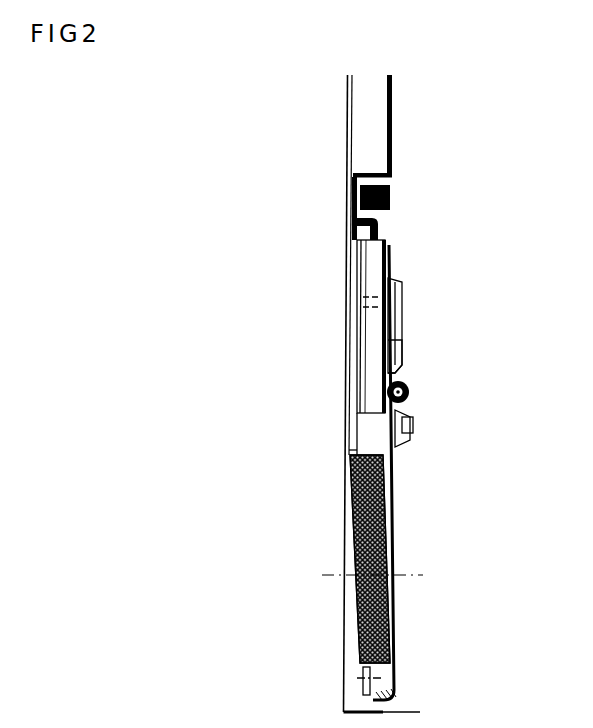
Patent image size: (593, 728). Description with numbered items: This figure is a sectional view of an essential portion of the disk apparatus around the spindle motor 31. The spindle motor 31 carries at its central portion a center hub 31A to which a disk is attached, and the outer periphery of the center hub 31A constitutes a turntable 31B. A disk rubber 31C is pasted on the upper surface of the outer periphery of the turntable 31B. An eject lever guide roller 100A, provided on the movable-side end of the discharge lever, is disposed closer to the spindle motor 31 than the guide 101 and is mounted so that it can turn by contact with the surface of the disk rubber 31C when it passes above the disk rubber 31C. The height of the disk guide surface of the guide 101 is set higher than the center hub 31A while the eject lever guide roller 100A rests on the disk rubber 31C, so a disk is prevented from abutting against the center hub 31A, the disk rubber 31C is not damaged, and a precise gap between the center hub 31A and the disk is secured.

The spindle motor 31 is at (373, 252).
The disk rubber 31C is at (383, 275).
The turntable 31B is at (398, 297).
The center hub 31A is at (400, 352).
The eject lever guide roller 100A is at (410, 392).
The guide 101 is at (413, 428).